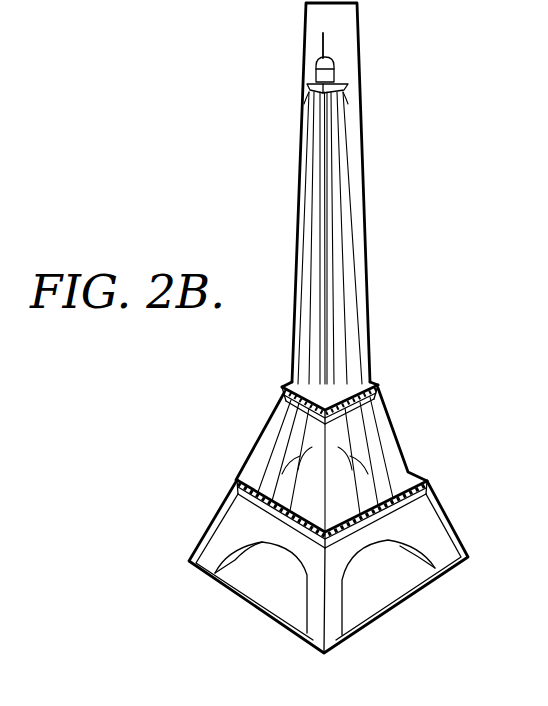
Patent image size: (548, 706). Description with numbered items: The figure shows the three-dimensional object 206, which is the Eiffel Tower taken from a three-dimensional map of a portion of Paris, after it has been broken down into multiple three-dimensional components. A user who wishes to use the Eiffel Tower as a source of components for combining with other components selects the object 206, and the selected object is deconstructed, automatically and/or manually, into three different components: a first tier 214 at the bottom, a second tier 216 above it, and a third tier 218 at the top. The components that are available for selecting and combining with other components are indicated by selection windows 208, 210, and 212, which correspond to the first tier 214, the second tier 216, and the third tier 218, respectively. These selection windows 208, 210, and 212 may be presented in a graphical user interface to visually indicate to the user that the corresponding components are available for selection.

The 3D object 206 is at (226, 114).
The selection window 208 is at (448, 515).
The selection window 210 is at (395, 424).
The selection window 212 is at (363, 156).
The first tier 214 is at (209, 520).
The second tier 216 is at (256, 440).
The third tier 218 is at (298, 31).